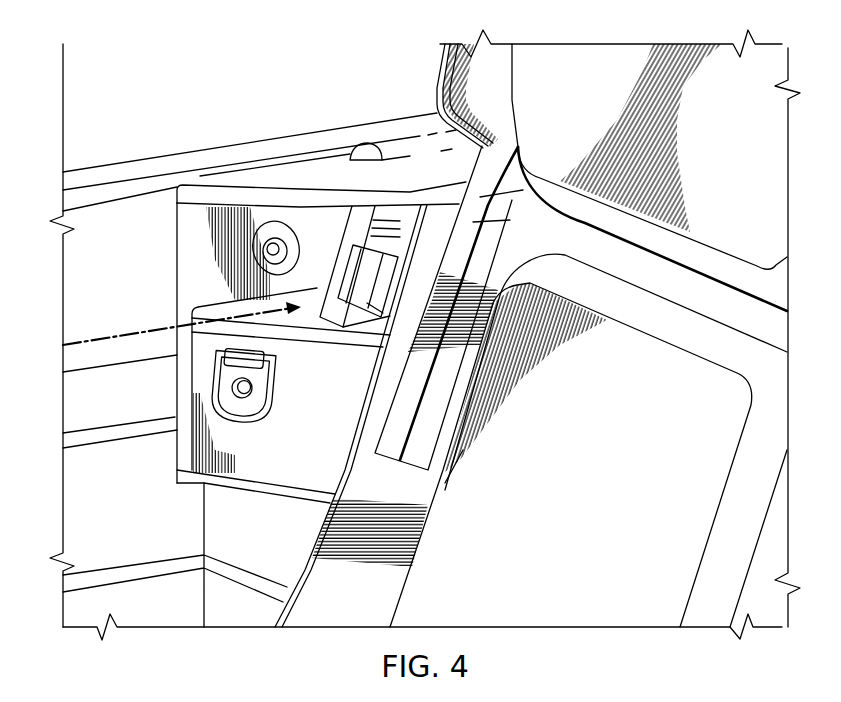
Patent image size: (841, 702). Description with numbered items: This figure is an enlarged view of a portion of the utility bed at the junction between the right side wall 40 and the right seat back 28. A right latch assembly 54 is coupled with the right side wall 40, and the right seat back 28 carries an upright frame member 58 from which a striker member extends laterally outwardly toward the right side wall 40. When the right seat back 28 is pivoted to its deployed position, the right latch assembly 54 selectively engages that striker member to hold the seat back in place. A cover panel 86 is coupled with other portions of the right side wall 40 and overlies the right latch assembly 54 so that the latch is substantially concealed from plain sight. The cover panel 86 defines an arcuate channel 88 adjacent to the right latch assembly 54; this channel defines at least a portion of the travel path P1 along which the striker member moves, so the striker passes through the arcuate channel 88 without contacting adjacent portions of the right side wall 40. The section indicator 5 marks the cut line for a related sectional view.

The right seat back 28 is at (430, 64).
The right side wall 40 is at (252, 152).
The right latch assembly 54 is at (340, 229).
The upright frame member 58 is at (502, 142).
The cover panel 86 is at (285, 468).
The arcuate channel 88 is at (193, 236).
The section line 5- 5 is at (413, 195).
The travel path P1 is at (126, 328).